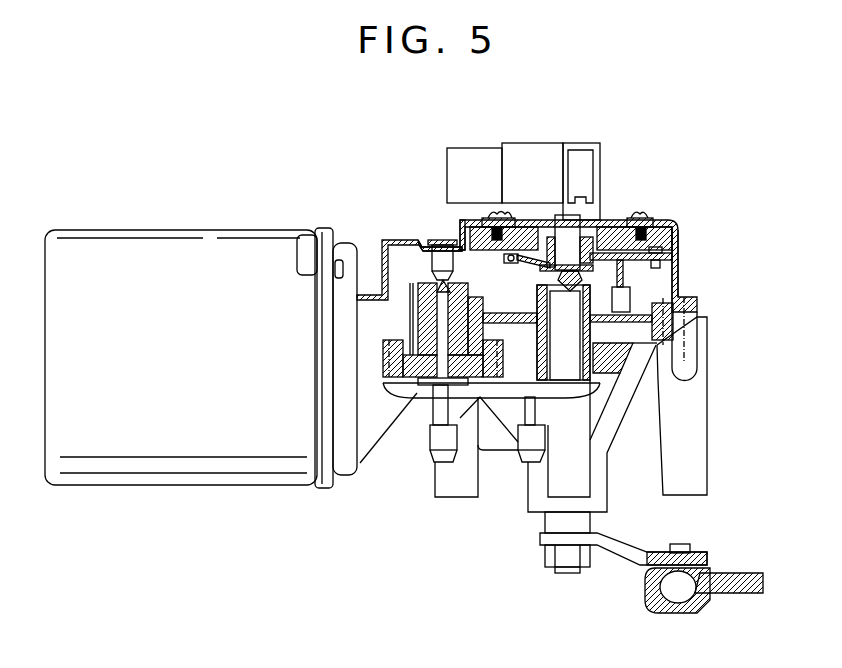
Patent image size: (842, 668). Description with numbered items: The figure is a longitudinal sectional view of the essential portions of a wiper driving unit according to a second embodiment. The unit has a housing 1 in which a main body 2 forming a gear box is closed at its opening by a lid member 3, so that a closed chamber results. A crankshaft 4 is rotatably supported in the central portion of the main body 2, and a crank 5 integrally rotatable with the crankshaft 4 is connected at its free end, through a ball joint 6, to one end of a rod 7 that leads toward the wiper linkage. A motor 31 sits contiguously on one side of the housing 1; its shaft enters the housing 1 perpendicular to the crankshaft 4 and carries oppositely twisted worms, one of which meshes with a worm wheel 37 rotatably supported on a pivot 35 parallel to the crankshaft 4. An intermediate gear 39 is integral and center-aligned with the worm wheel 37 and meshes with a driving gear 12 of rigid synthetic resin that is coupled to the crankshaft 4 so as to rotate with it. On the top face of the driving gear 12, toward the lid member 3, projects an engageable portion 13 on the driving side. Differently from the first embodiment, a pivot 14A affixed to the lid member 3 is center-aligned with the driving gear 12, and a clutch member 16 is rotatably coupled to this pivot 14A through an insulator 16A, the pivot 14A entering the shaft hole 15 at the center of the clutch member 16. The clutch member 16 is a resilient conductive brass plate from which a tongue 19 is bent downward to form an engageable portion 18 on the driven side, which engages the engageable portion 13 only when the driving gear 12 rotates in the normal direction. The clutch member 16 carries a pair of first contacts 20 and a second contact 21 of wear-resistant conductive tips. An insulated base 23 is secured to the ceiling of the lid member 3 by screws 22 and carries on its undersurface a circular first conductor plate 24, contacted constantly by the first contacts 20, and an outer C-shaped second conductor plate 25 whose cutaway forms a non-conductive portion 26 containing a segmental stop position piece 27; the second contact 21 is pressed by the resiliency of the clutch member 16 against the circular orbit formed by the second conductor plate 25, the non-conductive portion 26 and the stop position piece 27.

The housing 1 is at (383, 237).
The main body 2 is at (377, 438).
The lid member 3 is at (410, 240).
The crankshaft 4 is at (555, 522).
The crank 5 is at (617, 547).
The ball joint 6 is at (672, 588).
The rod 7 is at (737, 580).
The driving gear 12 is at (695, 352).
The engageable portion on the driving side 13 is at (622, 335).
The pivot 14A is at (575, 225).
The shaft hole 15 is at (568, 291).
The clutch member 16 is at (528, 262).
The insulator 16A is at (552, 235).
The engageable portion on the driven side 18 is at (588, 321).
The tongue 19 is at (625, 285).
The first contacts 20 is at (508, 263).
The second contact 21 is at (662, 267).
The screws 22 is at (490, 218).
The insulated base 23 is at (662, 222).
The first conductor plate 24 is at (518, 240).
The second conductor plate 25 is at (679, 242).
The non-conductive portion 26 is at (457, 217).
The stop position piece 27 is at (477, 217).
The motor 31 is at (190, 244).
The pivot 35 is at (438, 380).
The worm wheel 37 is at (385, 368).
The intermediate gear 39 is at (407, 303).